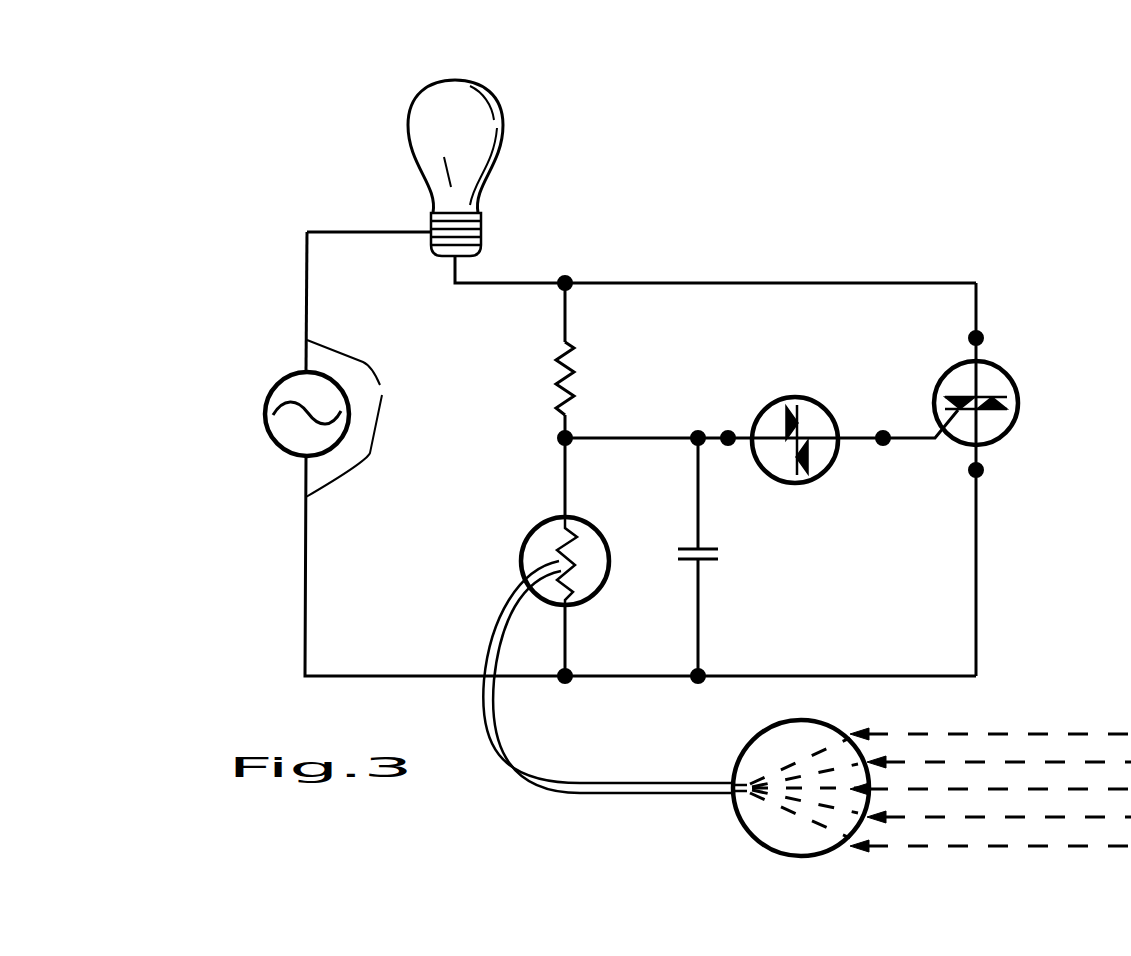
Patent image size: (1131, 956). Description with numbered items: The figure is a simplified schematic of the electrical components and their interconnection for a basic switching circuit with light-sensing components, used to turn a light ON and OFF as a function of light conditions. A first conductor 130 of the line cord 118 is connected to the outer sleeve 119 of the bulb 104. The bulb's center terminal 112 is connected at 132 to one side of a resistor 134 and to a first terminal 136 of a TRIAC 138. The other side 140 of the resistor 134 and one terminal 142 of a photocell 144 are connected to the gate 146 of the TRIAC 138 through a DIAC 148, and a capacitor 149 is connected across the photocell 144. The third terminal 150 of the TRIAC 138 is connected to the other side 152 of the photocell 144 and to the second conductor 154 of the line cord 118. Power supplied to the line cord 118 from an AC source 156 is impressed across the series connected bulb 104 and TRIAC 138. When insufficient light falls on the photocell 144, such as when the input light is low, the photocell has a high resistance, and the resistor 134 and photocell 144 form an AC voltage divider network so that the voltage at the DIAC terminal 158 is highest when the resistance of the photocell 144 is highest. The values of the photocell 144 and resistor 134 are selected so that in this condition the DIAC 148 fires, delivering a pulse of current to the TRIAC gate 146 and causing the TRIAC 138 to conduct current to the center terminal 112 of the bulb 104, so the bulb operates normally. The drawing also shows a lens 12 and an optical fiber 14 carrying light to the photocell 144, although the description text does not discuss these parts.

The lens 12 is at (752, 828).
The optical fiber 14 is at (518, 768).
The bulb 104 is at (425, 90).
The center terminal 112 is at (452, 258).
The line cord 118 is at (370, 418).
The outer sleeve 119 is at (480, 217).
The first conductor 130 is at (345, 232).
The connection point 132 is at (568, 280).
The resistor 134 is at (568, 362).
The first terminal 136 is at (978, 318).
The TRIAC 138 is at (1018, 405).
The other side of resistor 140 is at (566, 415).
The photocell terminal 142 is at (561, 485).
The photocell 144 is at (590, 520).
The gate 146 is at (922, 440).
The DIAC 148 is at (792, 397).
The capacitor 149 is at (715, 555).
The third terminal 150 is at (985, 470).
The other side of photocell 152 is at (568, 637).
The second conductor 154 is at (612, 678).
The AC source 156 is at (262, 412).
The DIAC terminal 158 is at (728, 435).